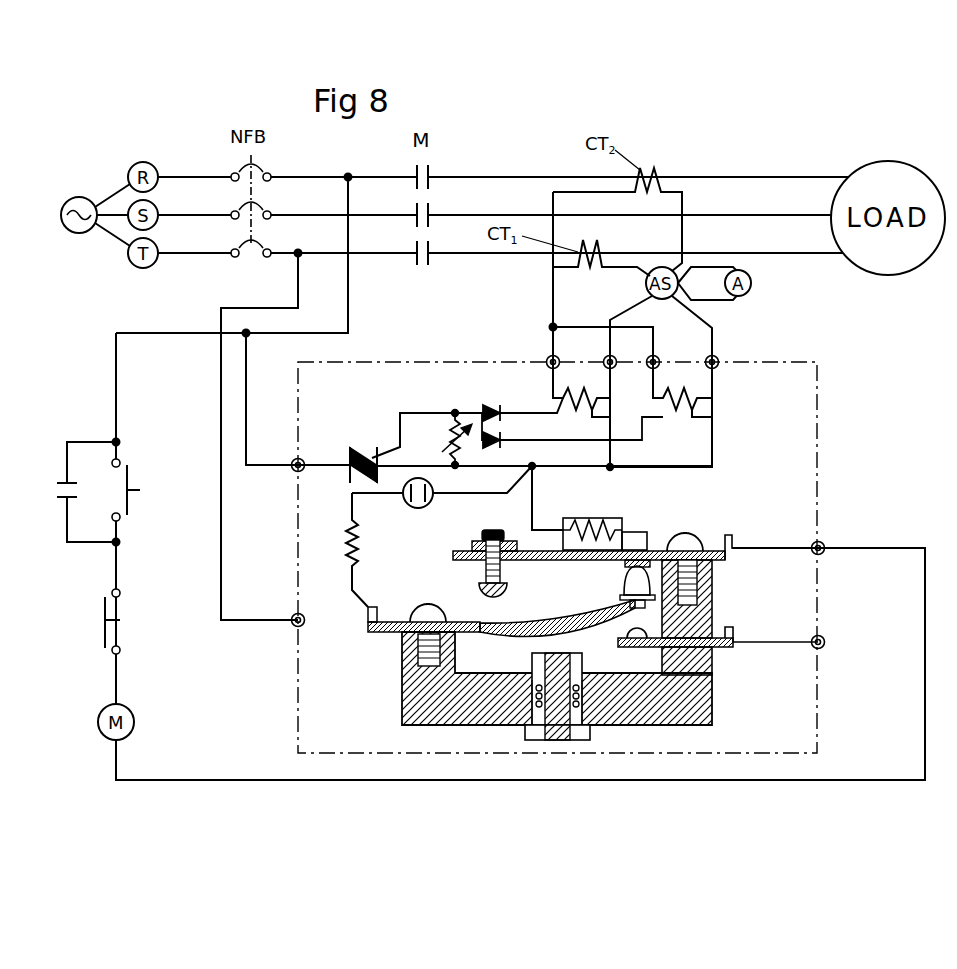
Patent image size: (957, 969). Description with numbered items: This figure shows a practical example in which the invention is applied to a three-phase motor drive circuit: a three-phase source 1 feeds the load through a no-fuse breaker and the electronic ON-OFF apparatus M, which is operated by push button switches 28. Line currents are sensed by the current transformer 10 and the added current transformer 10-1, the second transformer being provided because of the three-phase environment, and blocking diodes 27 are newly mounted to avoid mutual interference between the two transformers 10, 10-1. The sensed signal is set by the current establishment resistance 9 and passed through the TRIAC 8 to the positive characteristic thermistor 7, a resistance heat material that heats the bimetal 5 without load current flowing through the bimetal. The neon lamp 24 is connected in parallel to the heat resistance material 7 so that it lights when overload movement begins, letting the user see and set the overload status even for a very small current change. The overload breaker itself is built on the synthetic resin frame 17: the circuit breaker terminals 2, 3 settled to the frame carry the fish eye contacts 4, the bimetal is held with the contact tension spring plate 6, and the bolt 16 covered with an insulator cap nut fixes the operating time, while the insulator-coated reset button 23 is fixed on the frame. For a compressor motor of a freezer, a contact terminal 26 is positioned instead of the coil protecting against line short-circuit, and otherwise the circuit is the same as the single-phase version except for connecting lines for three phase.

The three-phase power source 1 is at (61, 214).
The circuit breaker terminal 2 is at (596, 584).
The circuit breaker terminal 3 is at (622, 582).
The fish eye contacts 4 is at (645, 565).
The bimetal 5 is at (453, 553).
The contact tension spring plate 6 is at (560, 633).
The positive characteristic thermistor 7 is at (622, 523).
The TRIAC 8 is at (350, 467).
The current establishment resistance 9 is at (448, 440).
The current transformer 10 is at (695, 400).
The current transformer 10-1 is at (553, 400).
The bolt for controlling operating time 16 is at (485, 573).
The synthetic resin frame 17 is at (712, 717).
The reset button 23 is at (547, 740).
The neon lamp 24 is at (410, 506).
The contact terminal 26 is at (735, 631).
The blocking diode 27 is at (498, 437).
The push button switch 28 is at (105, 603).